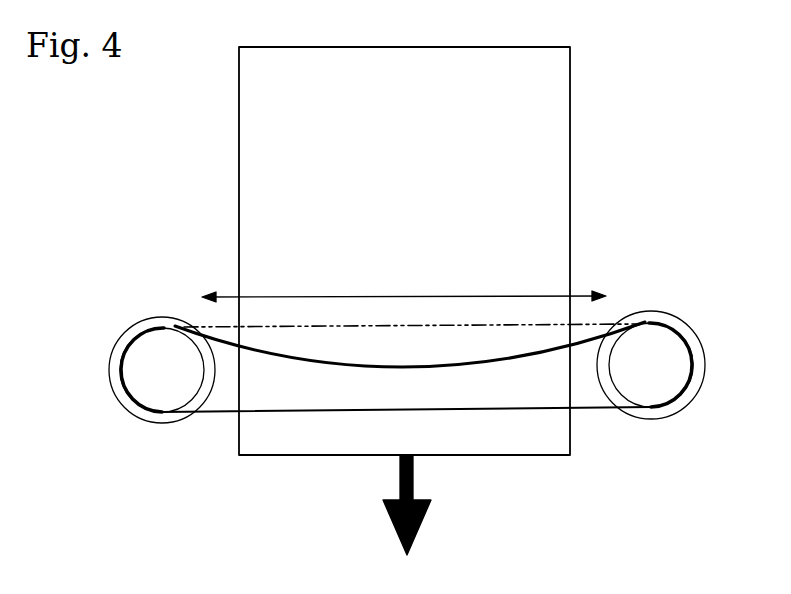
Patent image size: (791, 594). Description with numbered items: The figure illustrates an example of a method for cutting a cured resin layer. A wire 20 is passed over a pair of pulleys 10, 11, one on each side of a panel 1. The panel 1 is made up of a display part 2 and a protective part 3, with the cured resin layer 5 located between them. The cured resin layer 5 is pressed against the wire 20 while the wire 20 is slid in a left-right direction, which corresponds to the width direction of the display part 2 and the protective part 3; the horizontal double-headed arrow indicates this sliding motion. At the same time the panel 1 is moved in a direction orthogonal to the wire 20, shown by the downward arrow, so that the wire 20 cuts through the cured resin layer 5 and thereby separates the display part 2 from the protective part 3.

The panel 1 is at (450, 251).
The display part 2 is at (450, 251).
The protective part 3 is at (570, 148).
The cured resin layer 5 is at (538, 213).
The pulley 10 is at (672, 342).
The pulley 11 is at (137, 349).
The wire 20 is at (612, 326).